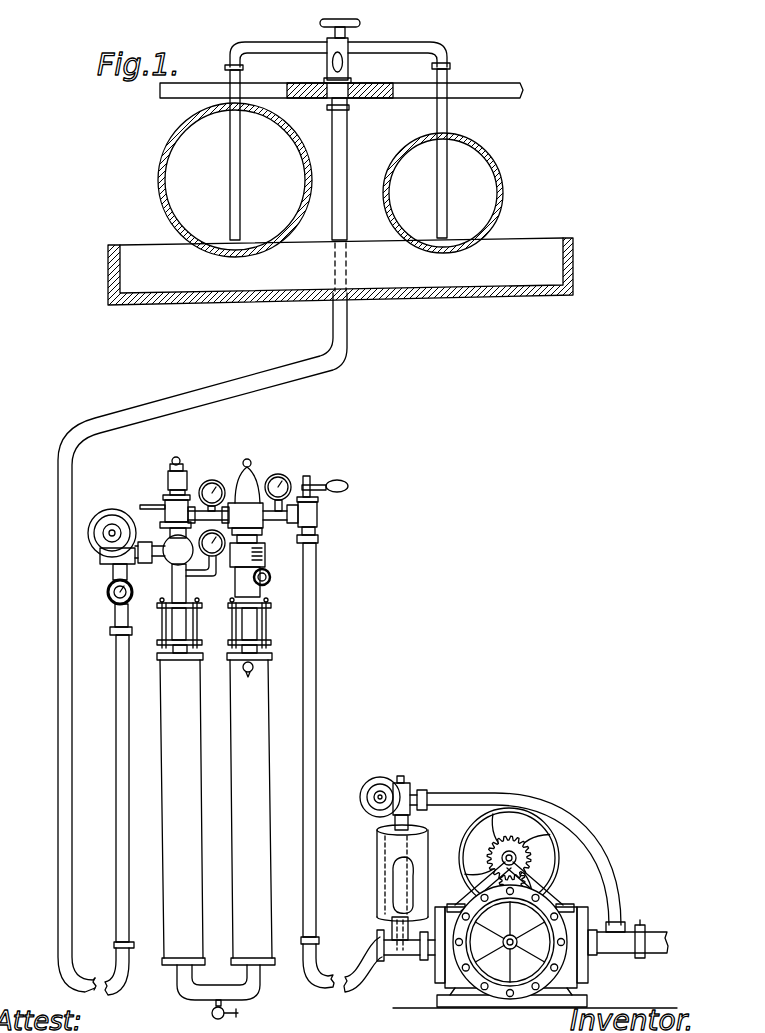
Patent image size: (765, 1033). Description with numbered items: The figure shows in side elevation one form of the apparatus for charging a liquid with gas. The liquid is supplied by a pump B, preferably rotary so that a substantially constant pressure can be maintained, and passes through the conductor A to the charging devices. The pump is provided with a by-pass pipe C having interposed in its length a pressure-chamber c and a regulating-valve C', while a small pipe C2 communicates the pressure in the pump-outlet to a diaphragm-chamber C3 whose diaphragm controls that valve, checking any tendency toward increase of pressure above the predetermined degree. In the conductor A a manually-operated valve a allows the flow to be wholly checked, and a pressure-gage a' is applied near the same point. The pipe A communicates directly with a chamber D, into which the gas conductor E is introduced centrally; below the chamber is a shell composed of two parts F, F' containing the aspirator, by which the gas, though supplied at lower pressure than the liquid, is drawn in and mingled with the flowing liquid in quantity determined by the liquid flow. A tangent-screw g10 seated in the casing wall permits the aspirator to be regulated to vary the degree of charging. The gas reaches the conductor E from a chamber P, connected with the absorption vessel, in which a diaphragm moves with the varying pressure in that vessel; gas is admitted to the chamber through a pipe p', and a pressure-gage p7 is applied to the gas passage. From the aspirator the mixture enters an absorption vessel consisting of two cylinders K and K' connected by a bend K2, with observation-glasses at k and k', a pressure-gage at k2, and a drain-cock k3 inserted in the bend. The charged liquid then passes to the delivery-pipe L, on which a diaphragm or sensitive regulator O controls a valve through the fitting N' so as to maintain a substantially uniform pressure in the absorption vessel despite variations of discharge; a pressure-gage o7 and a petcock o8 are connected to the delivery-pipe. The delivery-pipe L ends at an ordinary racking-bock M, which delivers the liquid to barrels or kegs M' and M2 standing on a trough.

The racking-bock M is at (337, 129).
The barrel or keg M' is at (443, 193).
The barrel or keg M2 is at (235, 180).
The delivery-pipe L is at (187, 392).
The diaphragm or sensitive regulator O is at (108, 516).
The coupling N' is at (122, 568).
The pressure-gage o7 is at (110, 601).
The petcock o8 is at (113, 631).
The chamber P is at (167, 517).
The pipe p' is at (151, 485).
The pressure-gage p7 is at (207, 480).
The gas inlet or conductor E is at (224, 510).
The chamber D is at (248, 508).
The pressure-gage a' is at (293, 481).
The manually-operated valve a is at (306, 509).
The pipe or conductor A is at (314, 718).
The shell part F is at (259, 546).
The shell part F' is at (266, 573).
The tangent-screw g10 is at (268, 579).
The pressure-gage k2 is at (221, 562).
The observation-glass k' is at (190, 623).
The cylinder K' is at (181, 805).
The observation-glass k is at (259, 623).
The cylinder K is at (251, 805).
The bend K2 is at (218, 979).
The drain-cock k3 is at (211, 1012).
The diaphragm-chamber C3 is at (372, 808).
The regulating-valve C' is at (423, 793).
The by-pass pipe C is at (526, 850).
The pressure-chamber c is at (393, 852).
The small pipe C2 is at (389, 923).
The pump B is at (540, 910).